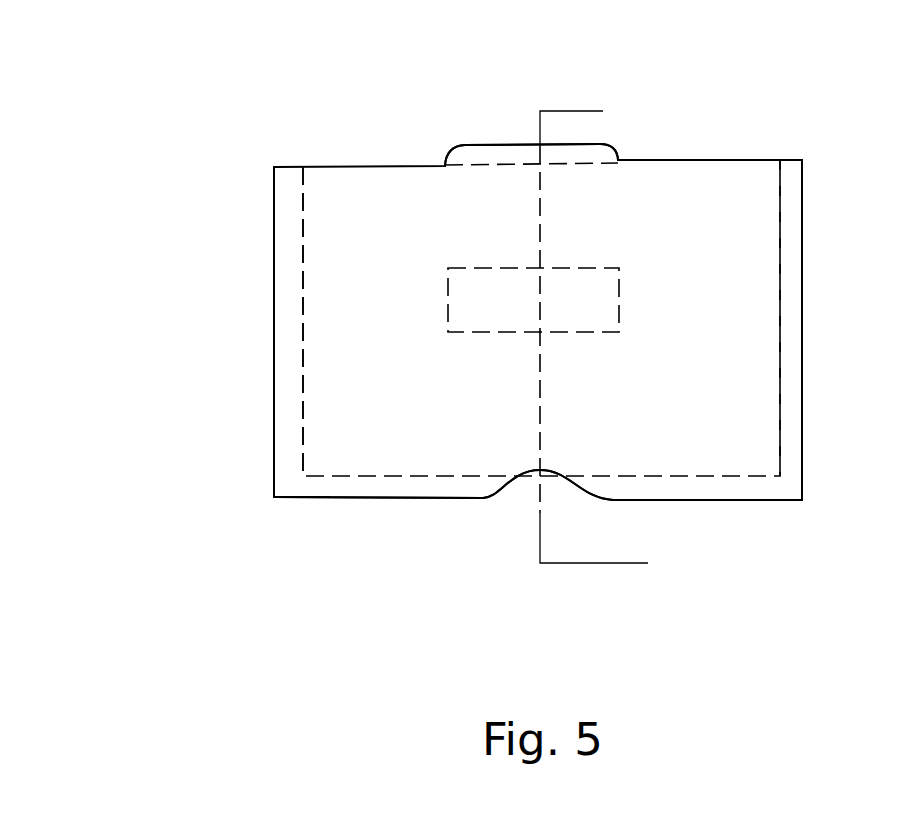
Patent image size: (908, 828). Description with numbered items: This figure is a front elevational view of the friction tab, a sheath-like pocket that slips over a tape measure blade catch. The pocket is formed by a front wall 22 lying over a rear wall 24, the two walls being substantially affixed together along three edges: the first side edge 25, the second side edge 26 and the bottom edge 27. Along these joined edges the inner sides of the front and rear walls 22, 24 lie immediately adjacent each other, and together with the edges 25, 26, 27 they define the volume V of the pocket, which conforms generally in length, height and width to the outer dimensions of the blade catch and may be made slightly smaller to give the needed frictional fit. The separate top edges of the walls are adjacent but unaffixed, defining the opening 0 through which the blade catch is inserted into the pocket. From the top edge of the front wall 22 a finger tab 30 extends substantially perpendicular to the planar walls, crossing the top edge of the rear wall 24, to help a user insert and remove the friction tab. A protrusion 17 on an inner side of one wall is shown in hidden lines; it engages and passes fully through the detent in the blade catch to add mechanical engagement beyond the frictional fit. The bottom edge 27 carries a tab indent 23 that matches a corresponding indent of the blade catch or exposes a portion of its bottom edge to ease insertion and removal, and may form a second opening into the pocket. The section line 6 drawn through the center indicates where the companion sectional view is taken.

The opening 0 is at (687, 150).
The volume V is at (730, 207).
The section line 6 is at (609, 343).
The protrusion 17 is at (477, 293).
The front wall 22 is at (337, 250).
The tab indent 23 is at (523, 476).
The rear wall 24 is at (812, 222).
The first side edge 25 is at (270, 413).
The second side edge 26 is at (802, 422).
The bottom edge 27 is at (357, 503).
The finger tab 30 is at (477, 143).